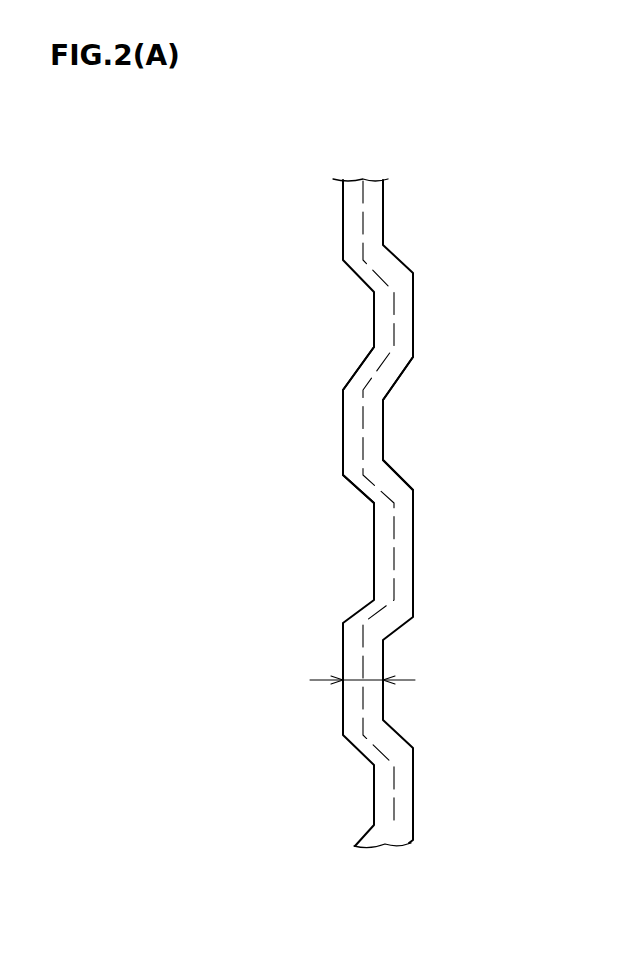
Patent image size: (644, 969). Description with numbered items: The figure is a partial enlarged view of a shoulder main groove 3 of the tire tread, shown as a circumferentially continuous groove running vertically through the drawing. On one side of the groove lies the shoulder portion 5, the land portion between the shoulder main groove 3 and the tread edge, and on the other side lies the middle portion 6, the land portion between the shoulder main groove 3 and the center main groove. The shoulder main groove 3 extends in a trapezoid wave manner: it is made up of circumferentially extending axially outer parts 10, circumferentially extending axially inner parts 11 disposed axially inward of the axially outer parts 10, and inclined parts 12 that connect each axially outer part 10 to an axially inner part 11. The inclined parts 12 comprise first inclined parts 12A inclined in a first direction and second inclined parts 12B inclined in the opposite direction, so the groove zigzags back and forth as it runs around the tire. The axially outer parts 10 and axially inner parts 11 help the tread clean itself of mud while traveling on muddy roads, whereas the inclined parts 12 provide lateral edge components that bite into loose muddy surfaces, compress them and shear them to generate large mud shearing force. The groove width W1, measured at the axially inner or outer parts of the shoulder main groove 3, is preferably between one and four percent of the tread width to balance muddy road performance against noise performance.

The shoulder main groove 3 is at (409, 476).
The shoulder portion 5 is at (276, 280).
The middle portion 6 is at (486, 280).
The axially outer part 10 is at (352, 428).
The axially inner part 11 is at (382, 553).
The inclined part 12 is at (472, 425).
The first inclined part 12A is at (388, 478).
The second inclined part 12B is at (394, 375).
The groove width W1 is at (372, 680).